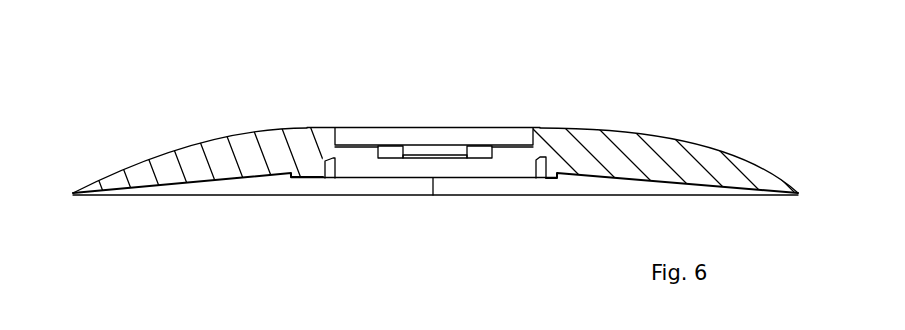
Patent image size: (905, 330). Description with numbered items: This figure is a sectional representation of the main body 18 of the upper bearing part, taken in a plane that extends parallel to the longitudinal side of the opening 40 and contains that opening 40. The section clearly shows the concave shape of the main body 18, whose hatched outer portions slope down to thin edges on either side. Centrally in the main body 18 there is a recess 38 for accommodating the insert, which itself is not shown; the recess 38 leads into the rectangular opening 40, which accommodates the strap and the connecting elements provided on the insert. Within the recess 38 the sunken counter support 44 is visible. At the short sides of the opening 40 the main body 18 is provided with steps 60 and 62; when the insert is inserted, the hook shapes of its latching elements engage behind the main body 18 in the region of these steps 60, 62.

The main body 18 is at (222, 152).
The recess 38 is at (379, 134).
The sunken counter support 44 is at (431, 153).
The rectangular opening 40 is at (368, 167).
The step of the main body 60 is at (333, 159).
The step of the main body 62 is at (541, 159).